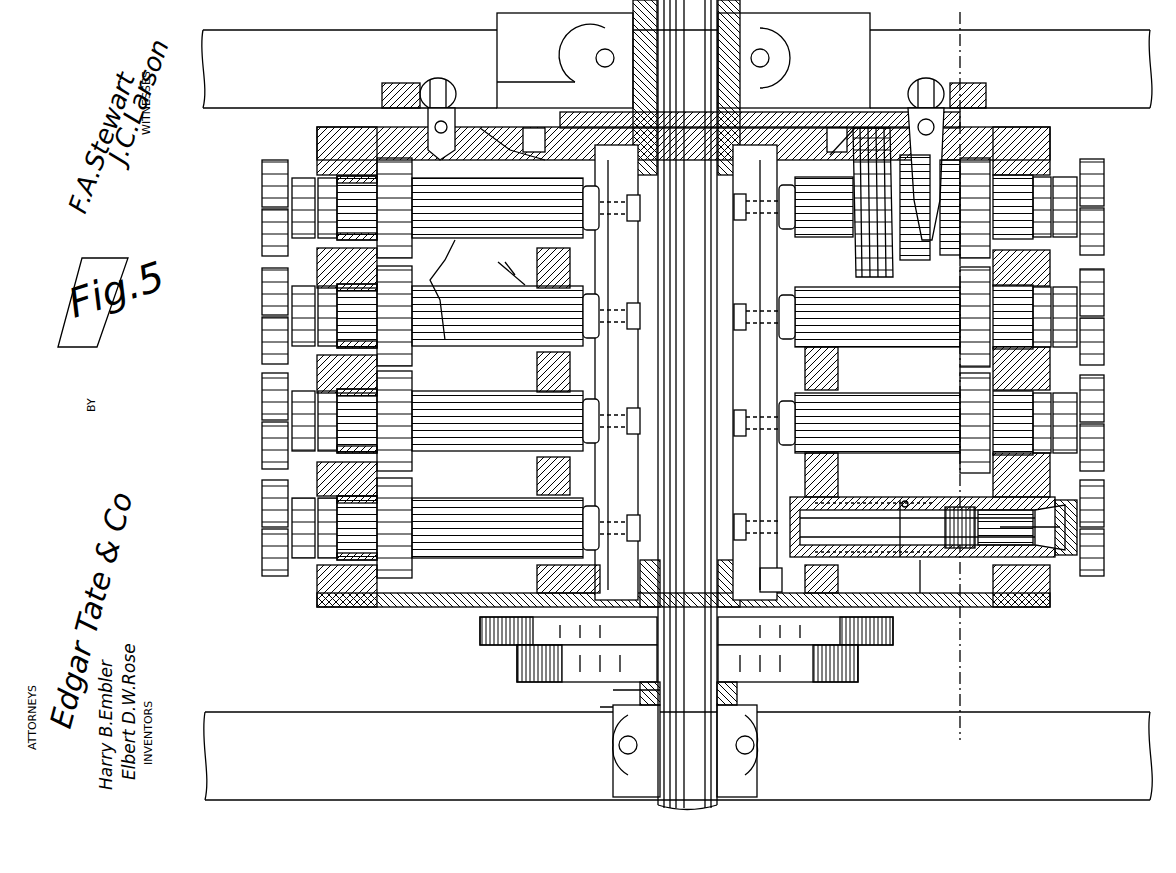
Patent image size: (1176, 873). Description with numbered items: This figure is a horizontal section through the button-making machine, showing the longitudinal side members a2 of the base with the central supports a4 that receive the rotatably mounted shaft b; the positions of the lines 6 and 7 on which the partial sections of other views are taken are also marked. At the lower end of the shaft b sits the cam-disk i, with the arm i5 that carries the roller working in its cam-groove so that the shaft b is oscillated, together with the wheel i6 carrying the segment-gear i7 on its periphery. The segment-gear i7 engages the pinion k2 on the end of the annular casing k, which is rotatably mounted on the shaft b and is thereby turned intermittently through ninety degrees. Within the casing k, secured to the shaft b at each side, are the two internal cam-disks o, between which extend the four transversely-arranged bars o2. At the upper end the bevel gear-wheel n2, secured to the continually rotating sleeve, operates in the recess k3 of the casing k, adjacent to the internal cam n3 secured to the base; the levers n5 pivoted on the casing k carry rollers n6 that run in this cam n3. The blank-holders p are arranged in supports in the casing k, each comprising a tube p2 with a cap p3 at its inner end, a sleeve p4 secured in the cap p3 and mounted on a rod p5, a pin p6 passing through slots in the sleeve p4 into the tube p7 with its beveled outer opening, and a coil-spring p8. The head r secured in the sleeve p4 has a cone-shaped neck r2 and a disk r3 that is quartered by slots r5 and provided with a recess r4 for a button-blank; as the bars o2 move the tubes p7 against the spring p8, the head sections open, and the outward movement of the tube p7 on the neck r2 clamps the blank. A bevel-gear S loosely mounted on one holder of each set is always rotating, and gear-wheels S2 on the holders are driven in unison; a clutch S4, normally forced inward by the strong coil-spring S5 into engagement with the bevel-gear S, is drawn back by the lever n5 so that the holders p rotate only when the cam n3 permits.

The side member a2 is at (677, 415).
The support a4 is at (612, 28).
The shaft b is at (690, 28).
The section line 6 is at (959, 378).
The section line 7 is at (1105, 172).
The annular casing k is at (317, 143).
The pinion k2 is at (640, 690).
The recess k3 is at (535, 128).
The bevel gear-wheel n2 is at (495, 125).
The internal cam n3 is at (382, 90).
The lever n5 is at (428, 118).
The roller n6 is at (432, 88).
The internal cam-disk o is at (740, 158).
The transversely-arranged bar o2 is at (612, 463).
The blank-holder p is at (580, 238).
The tube p2 is at (925, 500).
The cap p3 is at (805, 360).
The sleeve p4 is at (862, 557).
The rod p5 is at (900, 557).
The pin p6 is at (930, 557).
The tube p7 is at (950, 597).
The coil-spring p8 is at (870, 500).
The head r is at (262, 178).
The cone-shaped neck portion r2 is at (1065, 555).
The disk r3 is at (262, 240).
The recess r4 is at (1065, 527).
The slot r5 is at (262, 345).
The bevel-gear S is at (862, 262).
The gear-wheel S2 is at (418, 578).
The clutch S4 is at (435, 245).
The coil-spring S5 is at (945, 255).
The cam-disk i is at (517, 660).
The arm i5 is at (628, 720).
The wheel i6 is at (480, 627).
The segment-gear i7 is at (795, 627).